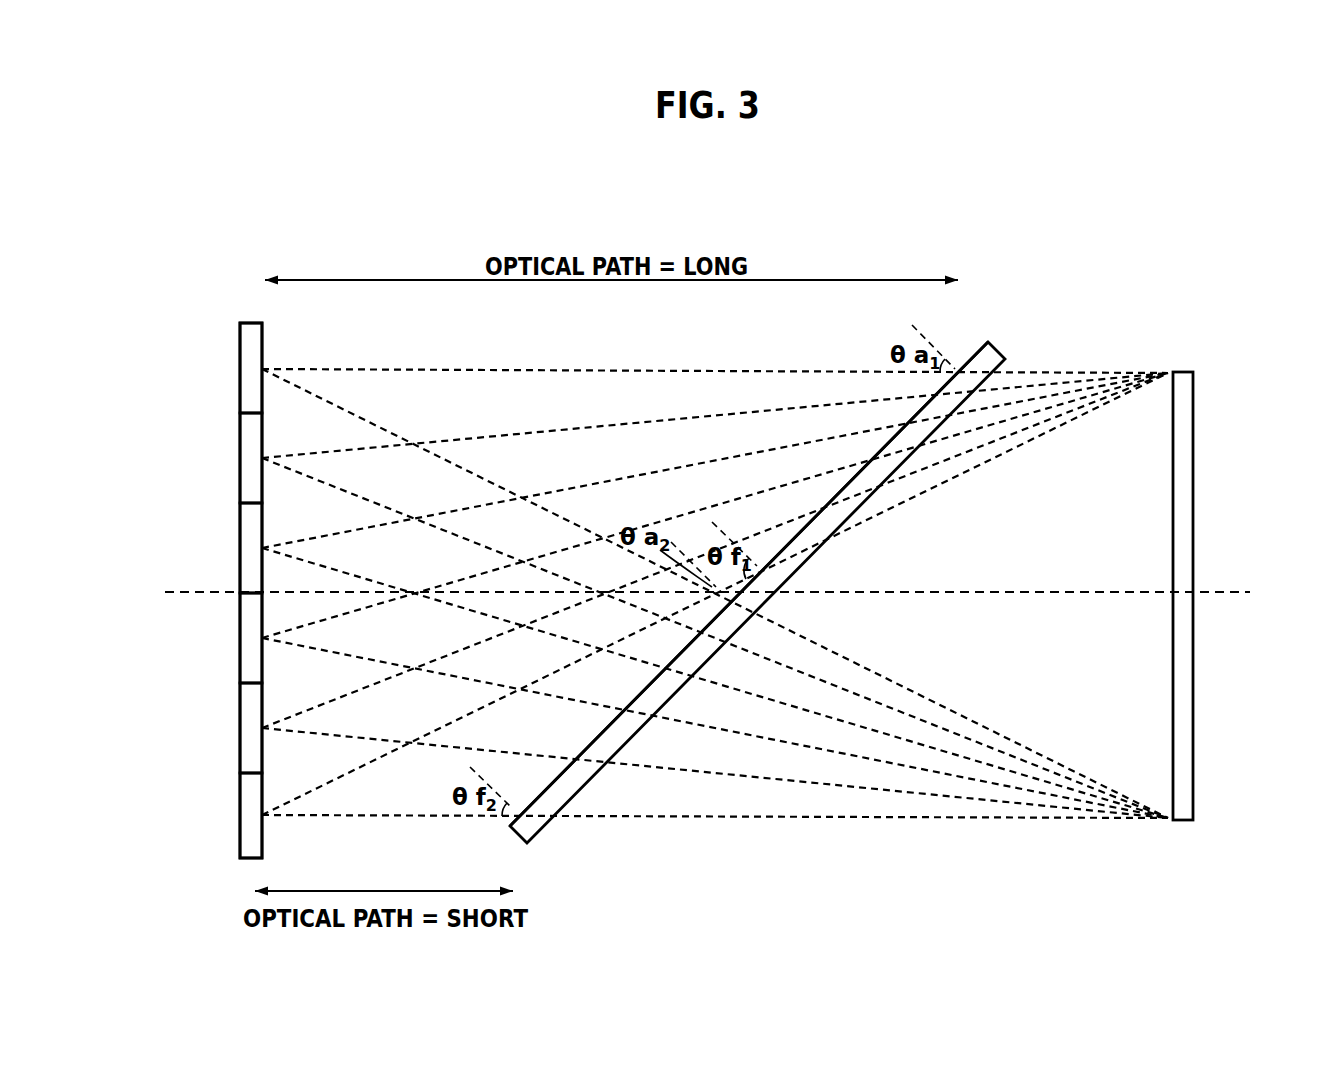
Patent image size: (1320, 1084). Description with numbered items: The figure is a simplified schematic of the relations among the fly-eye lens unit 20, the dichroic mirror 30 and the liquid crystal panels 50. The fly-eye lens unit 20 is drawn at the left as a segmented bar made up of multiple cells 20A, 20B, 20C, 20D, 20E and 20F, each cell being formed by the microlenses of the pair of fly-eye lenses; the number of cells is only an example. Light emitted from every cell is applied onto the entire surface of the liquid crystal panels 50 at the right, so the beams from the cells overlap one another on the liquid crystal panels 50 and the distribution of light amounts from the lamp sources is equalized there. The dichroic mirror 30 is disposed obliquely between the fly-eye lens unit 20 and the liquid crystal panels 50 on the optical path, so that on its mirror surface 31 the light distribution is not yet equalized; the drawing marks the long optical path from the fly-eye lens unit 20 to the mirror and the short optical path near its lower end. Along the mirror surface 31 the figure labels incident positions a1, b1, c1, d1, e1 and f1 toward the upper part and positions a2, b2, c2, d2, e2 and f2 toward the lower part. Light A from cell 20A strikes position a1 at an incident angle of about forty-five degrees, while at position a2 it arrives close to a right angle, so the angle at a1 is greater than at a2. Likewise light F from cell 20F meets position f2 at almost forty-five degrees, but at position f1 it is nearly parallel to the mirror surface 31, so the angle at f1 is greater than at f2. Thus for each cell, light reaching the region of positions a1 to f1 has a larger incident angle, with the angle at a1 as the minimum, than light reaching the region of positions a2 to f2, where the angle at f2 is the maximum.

The fly-eye lens unit 20 is at (249, 316).
The cell 20A is at (255, 372).
The cell 20B is at (255, 461).
The cell 20C is at (255, 550).
The cell 20D is at (255, 641).
The cell 20E is at (255, 730).
The cell 20F is at (255, 818).
The dichroic mirror 30 is at (998, 356).
The mirror surface 31 is at (979, 349).
The liquid crystal panels 50 is at (1193, 515).
The position a1 is at (958, 372).
The position b1 is at (936, 395).
The position c1 is at (908, 423).
The position d1 is at (872, 460).
The position e1 is at (824, 508).
The position f1 is at (762, 571).
The position a2 is at (731, 602).
The position b2 is at (701, 632).
The position c2 is at (666, 668).
The position d2 is at (624, 710).
The position e2 is at (576, 759).
The position f2 is at (520, 816).